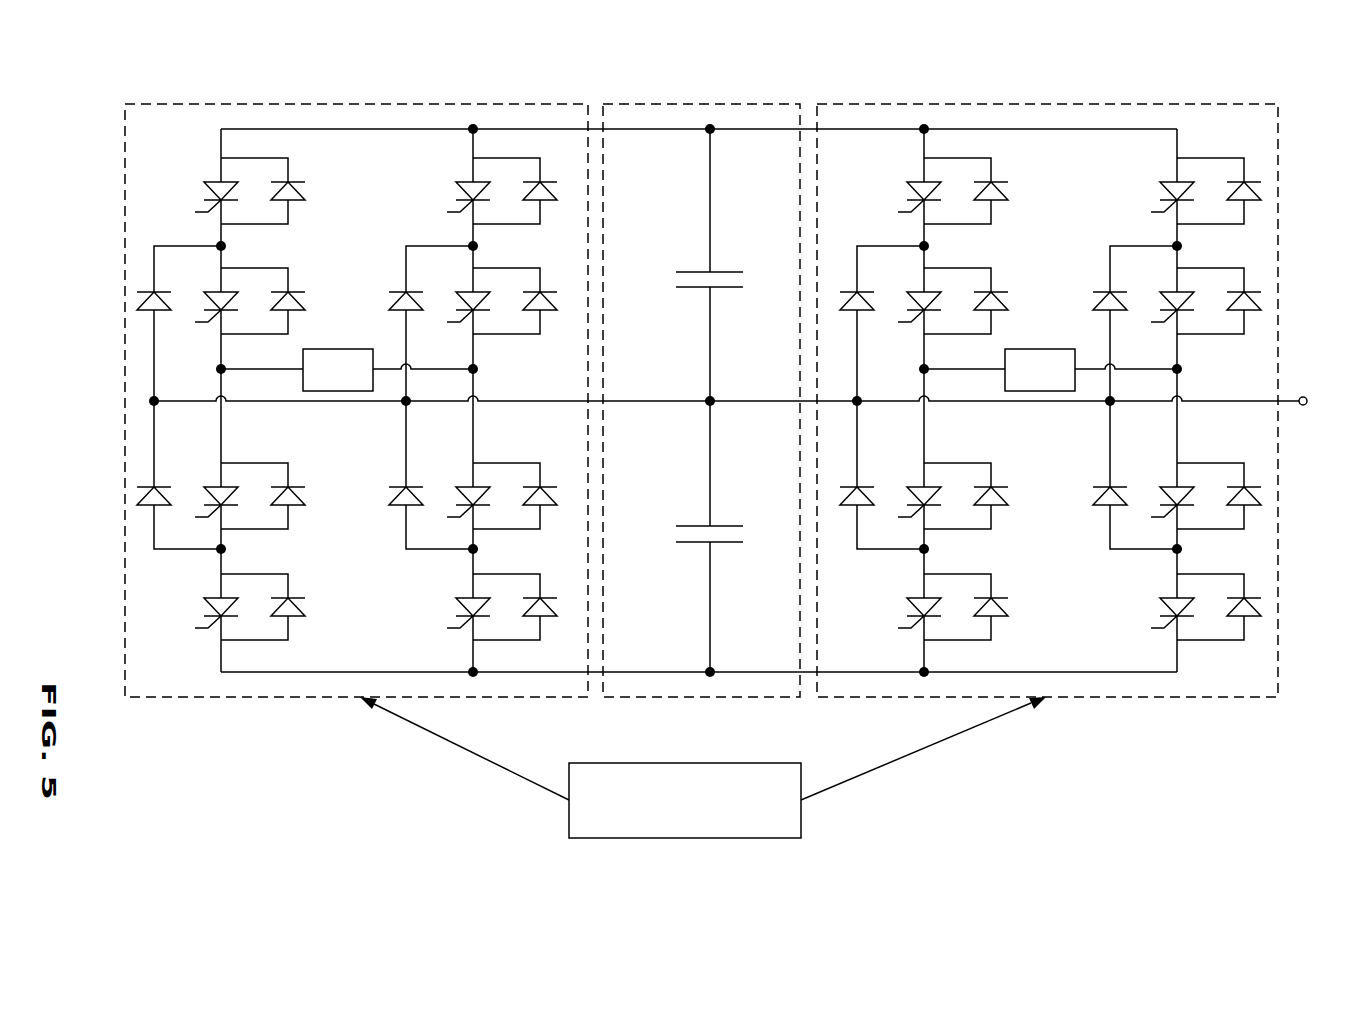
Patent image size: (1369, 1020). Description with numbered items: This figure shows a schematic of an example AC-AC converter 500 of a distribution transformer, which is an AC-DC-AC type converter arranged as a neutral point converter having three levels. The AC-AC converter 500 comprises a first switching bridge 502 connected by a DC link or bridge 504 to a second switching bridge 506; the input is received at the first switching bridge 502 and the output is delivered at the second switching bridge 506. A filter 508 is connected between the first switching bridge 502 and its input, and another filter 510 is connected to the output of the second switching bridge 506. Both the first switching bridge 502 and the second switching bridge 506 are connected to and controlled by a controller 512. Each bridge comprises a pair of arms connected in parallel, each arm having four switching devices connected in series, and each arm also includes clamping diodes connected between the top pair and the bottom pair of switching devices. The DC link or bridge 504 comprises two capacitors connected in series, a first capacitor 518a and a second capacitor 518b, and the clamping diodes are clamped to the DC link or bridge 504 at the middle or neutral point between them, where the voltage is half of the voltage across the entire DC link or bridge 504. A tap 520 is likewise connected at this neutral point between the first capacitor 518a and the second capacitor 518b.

The AC-AC converter 500 is at (150, 54).
The first switching bridge 502 is at (355, 104).
The DC link or bridge 504 is at (705, 104).
The second switching bridge 506 is at (1045, 104).
The filter 508 is at (340, 349).
The filter 510 is at (1041, 349).
The controller 512 is at (685, 763).
The first capacitor 518a is at (700, 272).
The second capacitor 518b is at (700, 526).
The tap 520 is at (1306, 398).